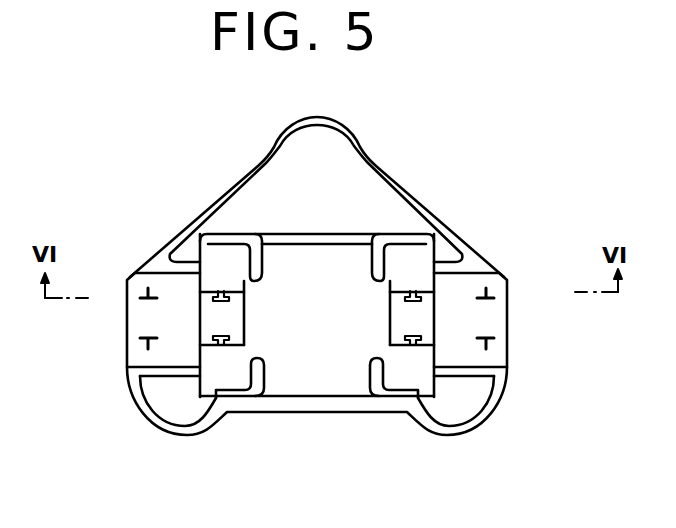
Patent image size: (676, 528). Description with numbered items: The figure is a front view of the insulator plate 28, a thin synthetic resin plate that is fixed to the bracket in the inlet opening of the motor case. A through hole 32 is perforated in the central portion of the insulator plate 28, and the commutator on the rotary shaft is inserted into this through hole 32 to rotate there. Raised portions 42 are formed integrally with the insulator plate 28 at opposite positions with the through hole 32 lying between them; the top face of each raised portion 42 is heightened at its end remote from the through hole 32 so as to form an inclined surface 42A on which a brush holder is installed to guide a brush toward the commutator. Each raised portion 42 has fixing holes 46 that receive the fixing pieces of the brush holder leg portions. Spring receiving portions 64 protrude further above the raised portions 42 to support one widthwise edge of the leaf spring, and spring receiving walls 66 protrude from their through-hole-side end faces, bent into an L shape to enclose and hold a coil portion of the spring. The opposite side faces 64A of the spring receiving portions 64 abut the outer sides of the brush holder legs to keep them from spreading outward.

The insulator plate 28 is at (428, 206).
The through hole 32 is at (287, 245).
The raised portion 42 is at (494, 270).
The inclined surface 42A is at (130, 326).
The fixing hole 46 is at (232, 299).
The spring receiving portion 64 is at (206, 257).
The side face 64A is at (230, 343).
The spring receiving wall 66 is at (258, 240).